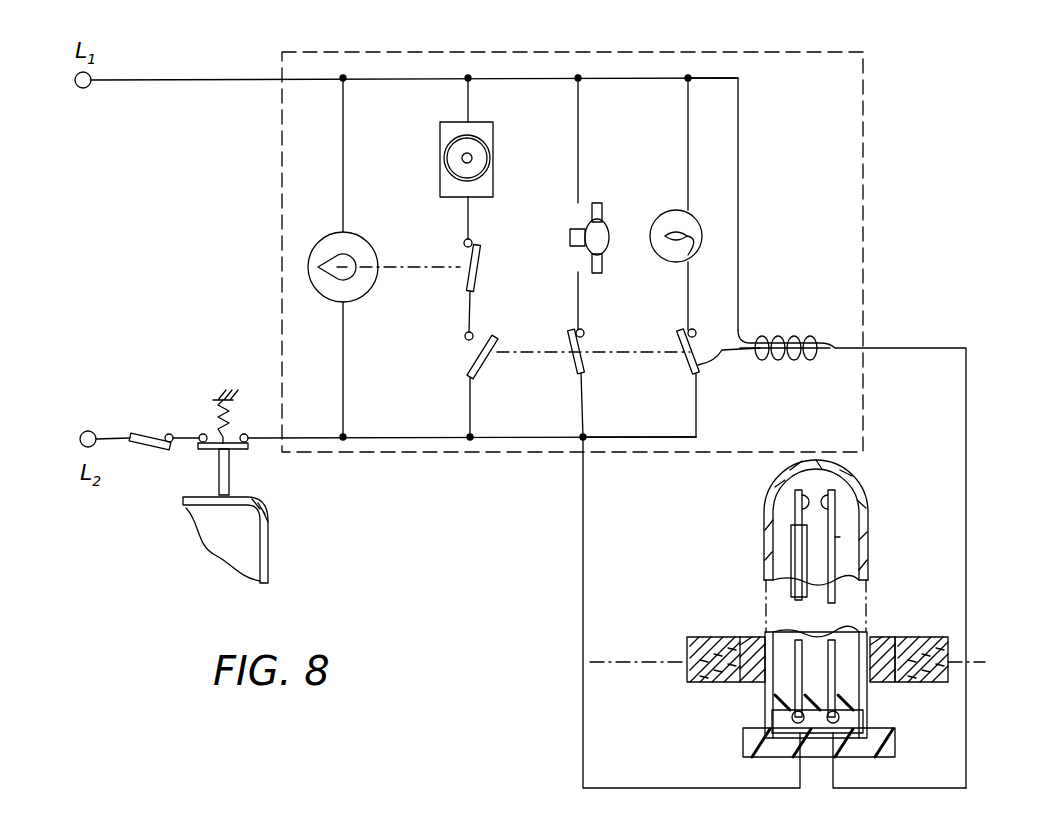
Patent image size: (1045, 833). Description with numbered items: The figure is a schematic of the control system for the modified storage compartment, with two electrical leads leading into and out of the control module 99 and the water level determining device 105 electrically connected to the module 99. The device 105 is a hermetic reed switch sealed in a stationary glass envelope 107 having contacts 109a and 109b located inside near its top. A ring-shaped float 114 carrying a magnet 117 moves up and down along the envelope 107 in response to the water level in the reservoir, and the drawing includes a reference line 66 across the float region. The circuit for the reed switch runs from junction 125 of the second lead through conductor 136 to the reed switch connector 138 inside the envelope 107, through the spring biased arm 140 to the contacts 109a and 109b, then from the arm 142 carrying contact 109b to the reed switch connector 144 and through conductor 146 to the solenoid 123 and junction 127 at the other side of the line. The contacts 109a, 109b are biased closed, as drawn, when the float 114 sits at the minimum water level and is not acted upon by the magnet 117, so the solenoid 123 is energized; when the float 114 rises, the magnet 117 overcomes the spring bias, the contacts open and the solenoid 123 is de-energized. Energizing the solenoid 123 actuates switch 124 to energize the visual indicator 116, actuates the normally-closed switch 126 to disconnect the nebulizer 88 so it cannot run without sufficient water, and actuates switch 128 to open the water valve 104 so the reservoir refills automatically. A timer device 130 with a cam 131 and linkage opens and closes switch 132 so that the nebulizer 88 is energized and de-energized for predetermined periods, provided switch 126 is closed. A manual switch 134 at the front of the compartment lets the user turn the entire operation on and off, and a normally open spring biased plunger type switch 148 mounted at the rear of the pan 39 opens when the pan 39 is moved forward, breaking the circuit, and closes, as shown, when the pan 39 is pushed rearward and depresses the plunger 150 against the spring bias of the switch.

The control module 99 is at (862, 75).
The junction 127 is at (700, 68).
The nebulizer 88 is at (487, 125).
The cam 131 is at (350, 250).
The timer device 130 is at (372, 292).
The switch 132 is at (477, 248).
The normally-closed switch 126 is at (470, 357).
The water valve 104 is at (605, 262).
The switch 128 is at (572, 367).
The visual indicator 116 is at (665, 215).
The switch 124 is at (700, 368).
The solenoid 123 is at (785, 340).
The junction 125 is at (583, 437).
The manual switch 134 is at (148, 437).
The plunger type switch 148 is at (248, 447).
The plunger 150 is at (230, 470).
The pan 39 is at (266, 558).
The conductor 136 is at (583, 510).
The reference plane (wall) 66 is at (613, 662).
The water level determining device 105 is at (757, 512).
The glass envelope 107 is at (866, 503).
The contact 109a is at (796, 490).
The contact 109b is at (832, 490).
The arm 142 is at (840, 538).
The spring biased arm 140 is at (793, 655).
The magnet 117 is at (883, 637).
The ring-shaped float 114 is at (924, 637).
The reed switch connector 138 is at (775, 718).
The reed switch connector 144 is at (860, 718).
The conductor 146 is at (915, 788).